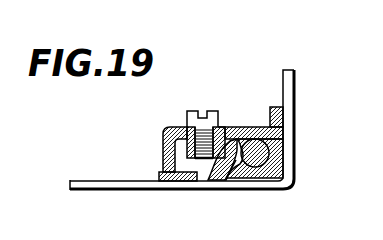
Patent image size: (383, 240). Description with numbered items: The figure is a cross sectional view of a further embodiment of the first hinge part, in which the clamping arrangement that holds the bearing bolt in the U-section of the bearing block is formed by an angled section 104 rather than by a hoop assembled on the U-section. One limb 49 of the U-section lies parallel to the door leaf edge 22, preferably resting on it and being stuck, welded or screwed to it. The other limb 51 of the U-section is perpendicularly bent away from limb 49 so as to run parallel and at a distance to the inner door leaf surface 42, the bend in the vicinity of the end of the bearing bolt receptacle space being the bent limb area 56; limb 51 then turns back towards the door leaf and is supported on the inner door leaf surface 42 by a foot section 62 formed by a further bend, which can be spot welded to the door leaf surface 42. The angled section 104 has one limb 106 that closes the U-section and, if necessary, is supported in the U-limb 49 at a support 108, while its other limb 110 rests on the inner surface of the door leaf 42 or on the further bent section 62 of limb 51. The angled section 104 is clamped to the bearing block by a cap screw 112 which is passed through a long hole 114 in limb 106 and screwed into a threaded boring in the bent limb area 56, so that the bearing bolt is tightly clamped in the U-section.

The door leaf edge 22 is at (296, 76).
The door leaf surface 42 is at (80, 181).
The limb 49 is at (272, 106).
The limb 51 is at (224, 158).
The bent limb area 56 is at (222, 153).
The foot section 62 is at (175, 174).
The angled section 104 is at (175, 126).
The limb 106 is at (253, 126).
The support 108 is at (272, 128).
The limb 110 is at (163, 156).
The cap screw 112 is at (193, 112).
The long hole 114 is at (238, 127).